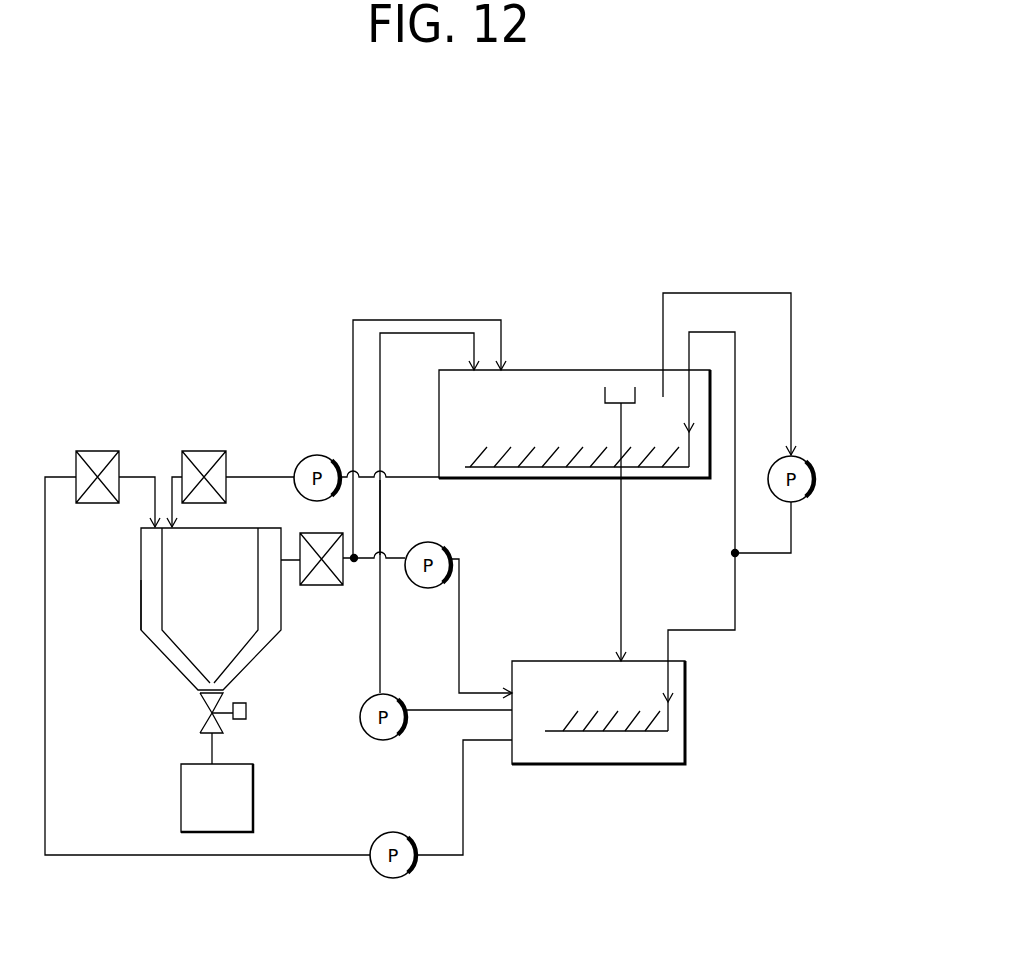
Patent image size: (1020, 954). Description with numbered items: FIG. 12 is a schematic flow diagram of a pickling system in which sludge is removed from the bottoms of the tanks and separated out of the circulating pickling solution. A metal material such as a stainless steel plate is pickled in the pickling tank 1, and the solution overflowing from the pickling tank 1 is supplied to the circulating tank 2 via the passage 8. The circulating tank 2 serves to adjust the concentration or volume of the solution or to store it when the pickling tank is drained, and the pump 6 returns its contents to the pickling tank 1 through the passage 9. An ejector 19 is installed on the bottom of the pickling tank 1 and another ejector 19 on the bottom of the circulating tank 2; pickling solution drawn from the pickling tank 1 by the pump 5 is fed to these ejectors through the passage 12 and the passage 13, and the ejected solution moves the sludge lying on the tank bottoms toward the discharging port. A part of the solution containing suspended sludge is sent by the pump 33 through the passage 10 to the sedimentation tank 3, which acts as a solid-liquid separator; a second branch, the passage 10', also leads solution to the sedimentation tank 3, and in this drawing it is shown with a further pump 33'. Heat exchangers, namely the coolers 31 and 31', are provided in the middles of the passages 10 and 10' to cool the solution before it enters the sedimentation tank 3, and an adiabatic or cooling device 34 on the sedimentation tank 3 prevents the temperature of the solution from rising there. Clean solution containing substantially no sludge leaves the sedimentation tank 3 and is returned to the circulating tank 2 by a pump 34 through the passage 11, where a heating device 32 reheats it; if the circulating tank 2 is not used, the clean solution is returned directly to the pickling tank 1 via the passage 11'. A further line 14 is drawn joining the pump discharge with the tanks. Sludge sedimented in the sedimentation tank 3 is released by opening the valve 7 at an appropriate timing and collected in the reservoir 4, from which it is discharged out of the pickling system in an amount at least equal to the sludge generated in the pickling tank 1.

The pickling tank 1 is at (603, 370).
The circulating tank 2 is at (590, 764).
The sedimentation tank 3 is at (220, 528).
The reservoir 4 is at (253, 797).
The pump 5 is at (814, 463).
The pump 6 is at (403, 693).
The valve 7 is at (246, 711).
The passage 8 is at (621, 572).
The passage 9 is at (380, 513).
The passage 10 is at (332, 436).
The passage 10' is at (304, 710).
The passage 11 is at (493, 628).
The passage 11' is at (429, 467).
The passage 12 is at (791, 388).
The passage 13 is at (791, 527).
The pipe 14 is at (735, 438).
The ejector 19 is at (520, 466).
The heat exchanger (cooler) 31 is at (196, 444).
The heat exchanger (cooler) 31' is at (116, 444).
The heating device 32 is at (317, 585).
The pump 33 is at (317, 438).
The pump 33' is at (404, 893).
The adiabatic device / cooling device 34 is at (141, 605).